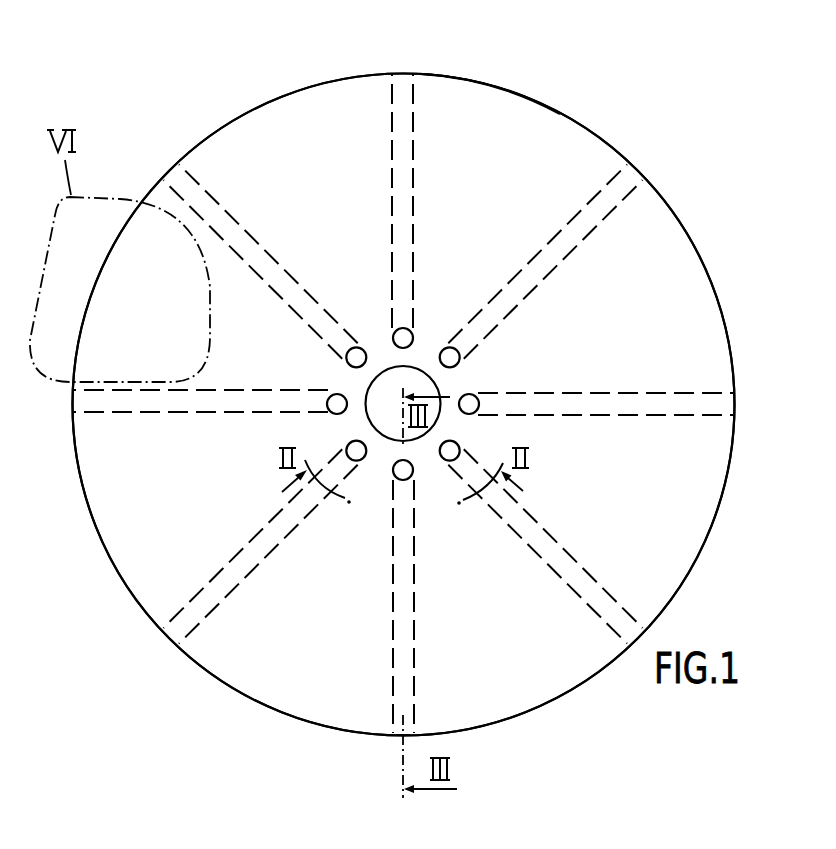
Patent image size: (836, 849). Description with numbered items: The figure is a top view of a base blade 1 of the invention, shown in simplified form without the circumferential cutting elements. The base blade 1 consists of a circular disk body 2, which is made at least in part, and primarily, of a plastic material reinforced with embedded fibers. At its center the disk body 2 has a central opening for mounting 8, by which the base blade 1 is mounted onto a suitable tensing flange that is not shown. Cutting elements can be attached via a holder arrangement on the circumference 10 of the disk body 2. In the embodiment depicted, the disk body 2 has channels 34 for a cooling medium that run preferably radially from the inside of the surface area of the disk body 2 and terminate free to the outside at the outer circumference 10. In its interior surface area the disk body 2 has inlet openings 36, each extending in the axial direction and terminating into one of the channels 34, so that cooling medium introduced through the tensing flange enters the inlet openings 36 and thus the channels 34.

The base blade 1 is at (236, 96).
The disk body 2 is at (705, 323).
The central opening for mounting 8 is at (416, 371).
The circumference 10 is at (494, 76).
The channels 34 is at (397, 238).
The inlet openings 36 is at (347, 358).